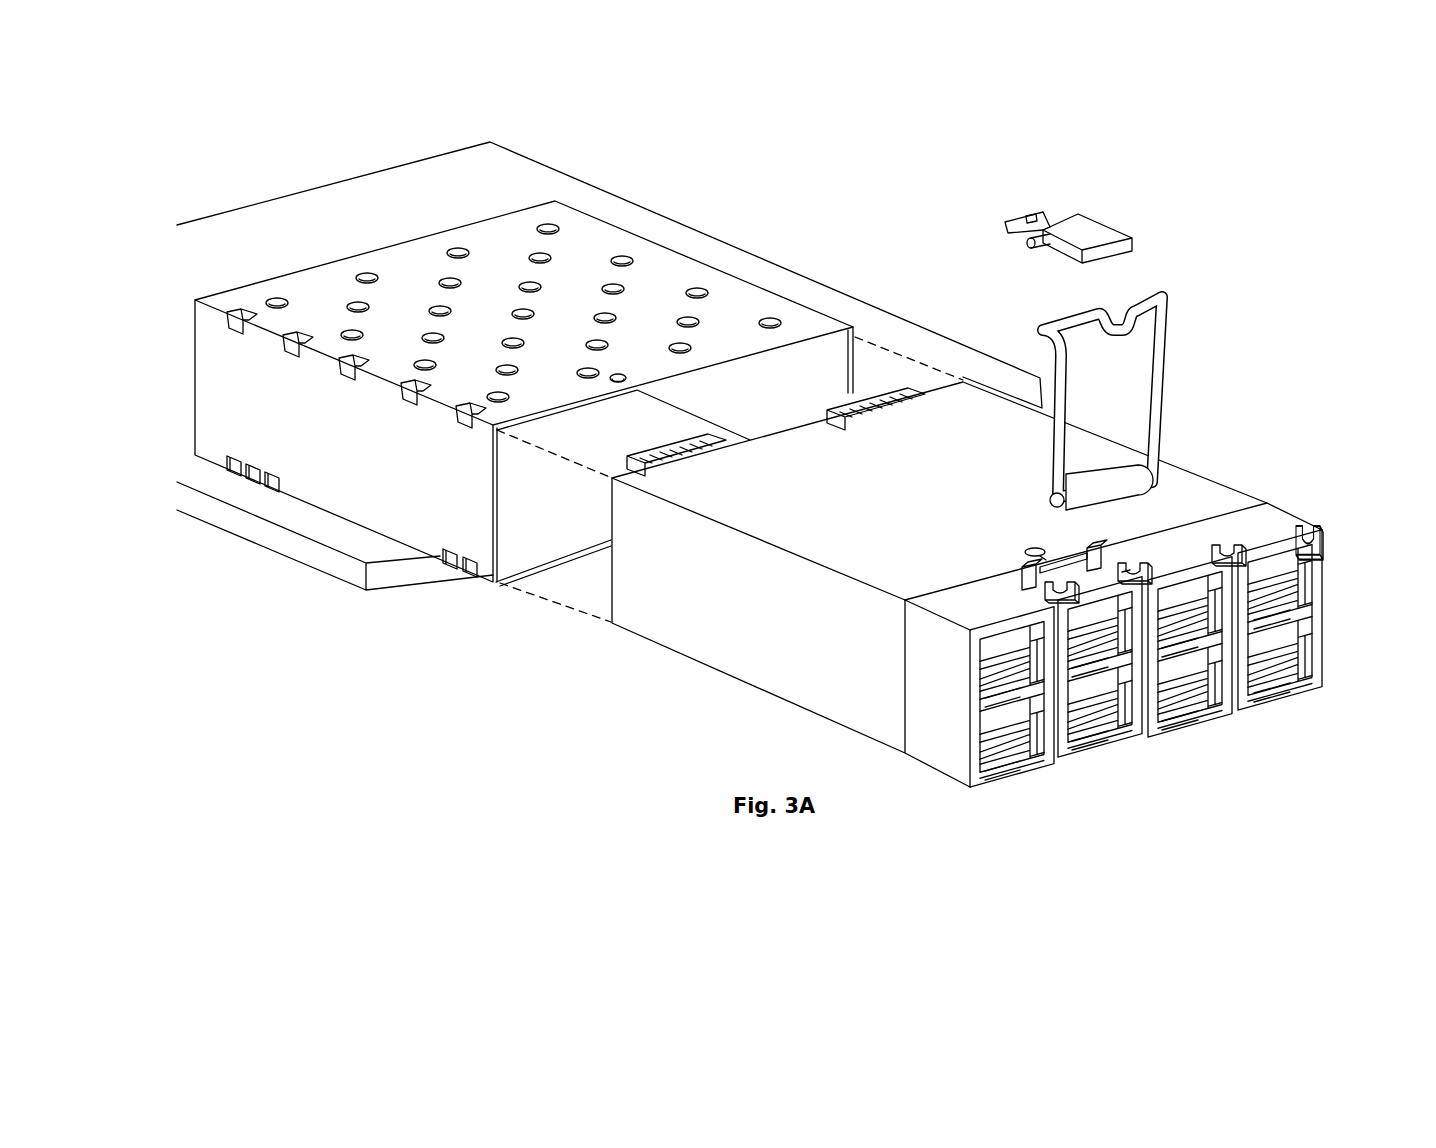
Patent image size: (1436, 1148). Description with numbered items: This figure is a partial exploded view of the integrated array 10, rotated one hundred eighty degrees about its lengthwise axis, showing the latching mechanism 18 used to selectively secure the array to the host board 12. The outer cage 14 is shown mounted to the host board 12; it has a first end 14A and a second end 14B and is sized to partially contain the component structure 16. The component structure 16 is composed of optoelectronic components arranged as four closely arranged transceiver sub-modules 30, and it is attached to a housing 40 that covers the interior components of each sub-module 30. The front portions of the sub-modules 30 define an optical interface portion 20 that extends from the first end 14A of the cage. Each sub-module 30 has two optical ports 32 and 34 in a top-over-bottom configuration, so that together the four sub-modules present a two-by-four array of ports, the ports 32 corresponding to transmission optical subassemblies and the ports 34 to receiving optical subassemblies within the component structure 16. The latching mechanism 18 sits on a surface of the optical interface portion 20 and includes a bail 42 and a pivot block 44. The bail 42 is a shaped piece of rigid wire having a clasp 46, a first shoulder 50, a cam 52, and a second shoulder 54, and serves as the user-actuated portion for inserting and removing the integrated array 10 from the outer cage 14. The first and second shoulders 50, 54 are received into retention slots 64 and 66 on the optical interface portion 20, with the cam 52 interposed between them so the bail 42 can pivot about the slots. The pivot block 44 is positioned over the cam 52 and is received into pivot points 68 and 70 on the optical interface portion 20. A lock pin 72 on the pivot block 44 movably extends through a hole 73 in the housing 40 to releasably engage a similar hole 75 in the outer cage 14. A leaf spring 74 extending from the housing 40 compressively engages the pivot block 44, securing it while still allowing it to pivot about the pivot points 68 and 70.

The integrated array 10 is at (1312, 497).
The host board 12 is at (415, 188).
The outer cage 14 is at (405, 258).
The first end 14A is at (903, 673).
The second end 14B is at (610, 528).
The component structure 16 is at (938, 730).
The latching mechanism 18 is at (1113, 381).
The optical interface portion 20 is at (1210, 535).
The transceiver sub-module 30 is at (1025, 700).
The optical port 32 is at (1000, 710).
The optical port 34 is at (1082, 655).
The housing 40 is at (878, 513).
The bail 42 is at (1045, 363).
The pivot block 44 is at (1055, 203).
The clasp 46 is at (1100, 485).
The first shoulder 50 is at (1035, 326).
The cam 52 is at (1094, 338).
The second shoulder 54 is at (1170, 293).
The retention slot 64 is at (1042, 593).
The retention slot 66 is at (1127, 563).
The pivot point 68 is at (1023, 568).
The pivot point 70 is at (1090, 555).
The lock pin 72 is at (1032, 218).
The hole 73 is at (1028, 552).
The leaf spring 74 is at (1123, 565).
The hole 75 is at (610, 376).